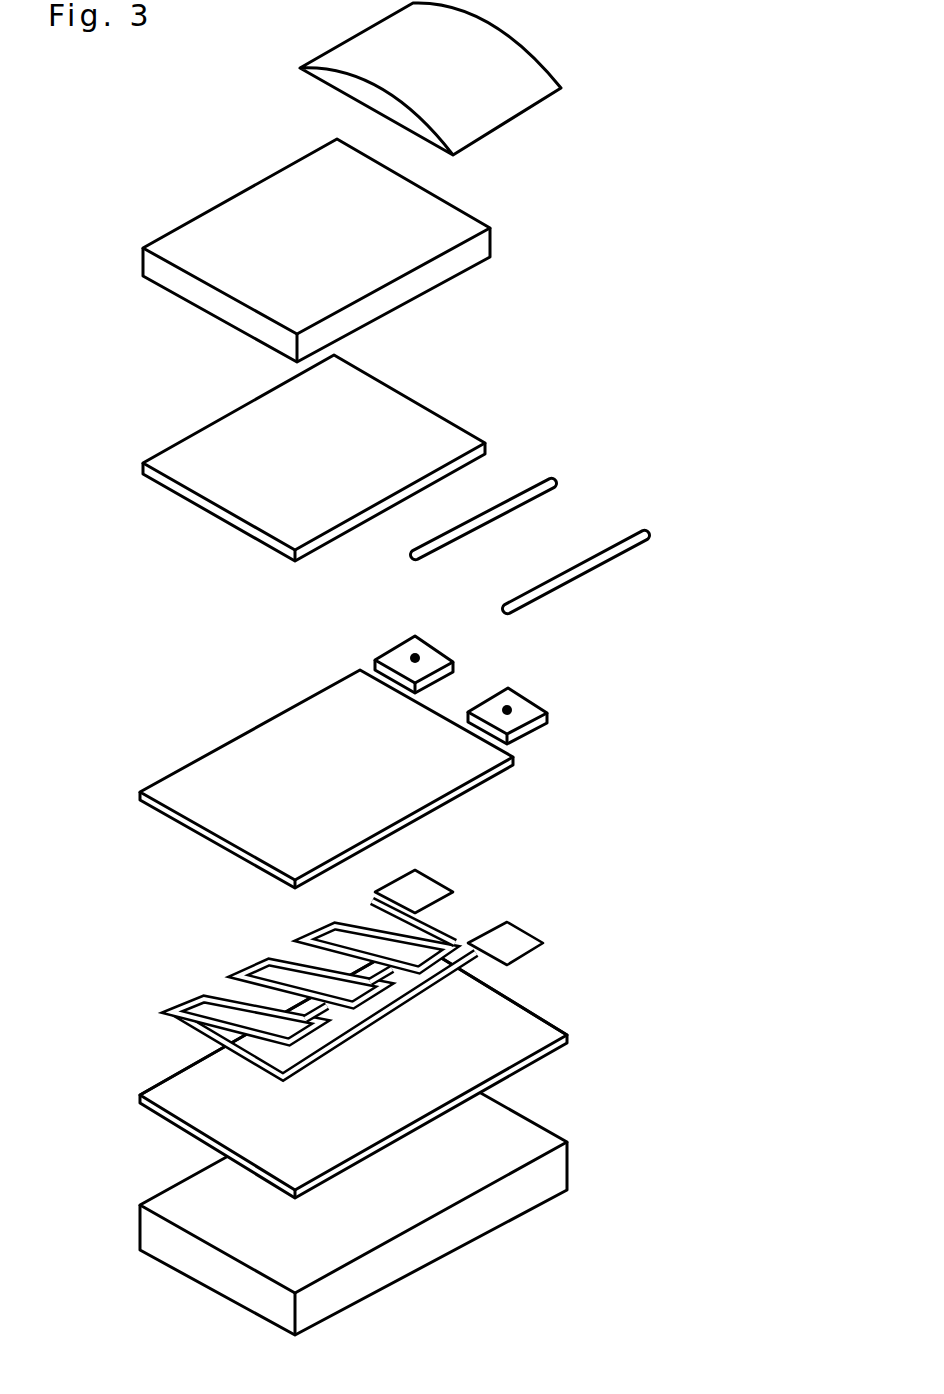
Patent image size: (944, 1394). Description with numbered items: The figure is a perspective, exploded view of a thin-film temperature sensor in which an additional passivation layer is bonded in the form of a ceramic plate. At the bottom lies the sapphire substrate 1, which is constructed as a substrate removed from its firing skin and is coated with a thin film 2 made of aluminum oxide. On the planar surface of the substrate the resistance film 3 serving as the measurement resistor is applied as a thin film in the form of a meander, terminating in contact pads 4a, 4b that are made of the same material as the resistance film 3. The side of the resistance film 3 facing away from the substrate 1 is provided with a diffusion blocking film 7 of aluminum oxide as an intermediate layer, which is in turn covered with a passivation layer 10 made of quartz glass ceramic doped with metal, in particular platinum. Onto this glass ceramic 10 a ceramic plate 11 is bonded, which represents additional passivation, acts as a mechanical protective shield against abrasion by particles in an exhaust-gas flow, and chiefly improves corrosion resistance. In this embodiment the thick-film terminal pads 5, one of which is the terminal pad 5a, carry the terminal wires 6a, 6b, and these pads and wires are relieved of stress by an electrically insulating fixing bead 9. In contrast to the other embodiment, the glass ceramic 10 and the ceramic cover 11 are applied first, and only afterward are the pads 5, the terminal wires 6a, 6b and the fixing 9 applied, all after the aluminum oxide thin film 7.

The substrate 1 is at (400, 1252).
The thin film 2 is at (417, 1123).
The resistance film 3 is at (445, 993).
The contact pad 4a is at (533, 930).
The contact pad 4b is at (445, 878).
The thick-film pads 5 is at (470, 636).
The terminal pad 5a is at (548, 724).
The terminal wire 6a is at (648, 548).
The terminal wire 6b is at (557, 490).
The diffusion blocking film 7 is at (515, 770).
The fixing bead 9 is at (560, 88).
The passivation layer 10 is at (410, 406).
The ceramic plate 11 is at (458, 258).